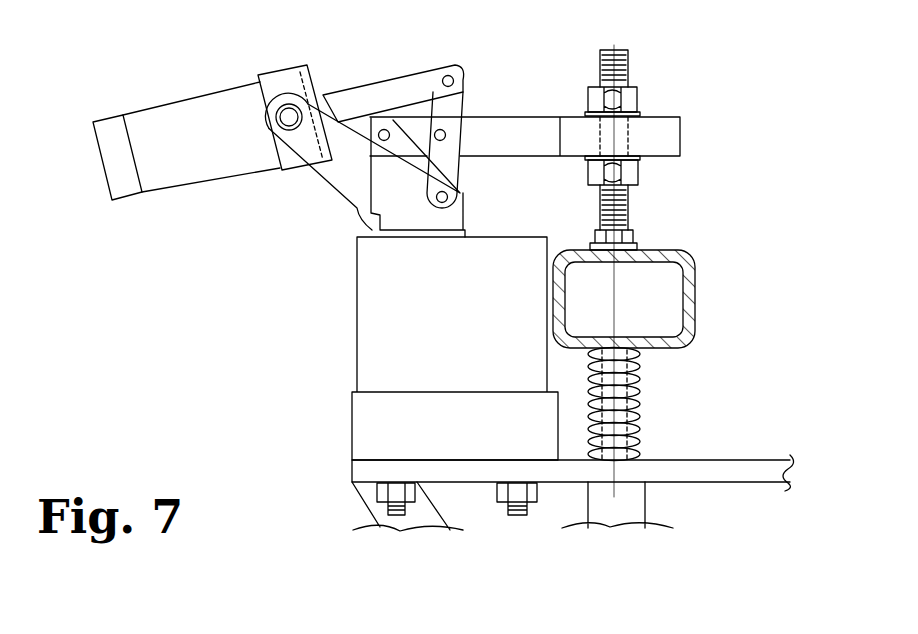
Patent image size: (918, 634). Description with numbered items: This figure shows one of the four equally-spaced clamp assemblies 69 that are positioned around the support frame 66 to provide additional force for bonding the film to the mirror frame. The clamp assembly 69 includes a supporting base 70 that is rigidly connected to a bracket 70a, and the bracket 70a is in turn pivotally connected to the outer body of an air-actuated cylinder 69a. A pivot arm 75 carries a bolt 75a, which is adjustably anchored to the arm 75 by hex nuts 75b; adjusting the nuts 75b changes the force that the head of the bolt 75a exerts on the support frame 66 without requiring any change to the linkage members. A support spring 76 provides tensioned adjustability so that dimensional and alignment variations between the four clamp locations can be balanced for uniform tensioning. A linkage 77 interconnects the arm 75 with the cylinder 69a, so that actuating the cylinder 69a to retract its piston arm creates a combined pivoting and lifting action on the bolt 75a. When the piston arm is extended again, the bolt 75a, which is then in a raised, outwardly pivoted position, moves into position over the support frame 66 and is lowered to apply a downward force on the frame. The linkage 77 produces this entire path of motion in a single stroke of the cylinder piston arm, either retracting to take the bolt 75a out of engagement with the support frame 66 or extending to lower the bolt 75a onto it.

The support frame 66 is at (692, 275).
The clamp assembly 69 is at (313, 188).
The air-actuated cylinder 69a is at (162, 173).
The supporting base 70 is at (368, 352).
The bracket 70a is at (357, 185).
The pivot arm 75 is at (678, 137).
The bolt 75a is at (628, 210).
The hex nuts 75b is at (633, 102).
The support spring 76 is at (642, 412).
The linkage 77 is at (477, 102).